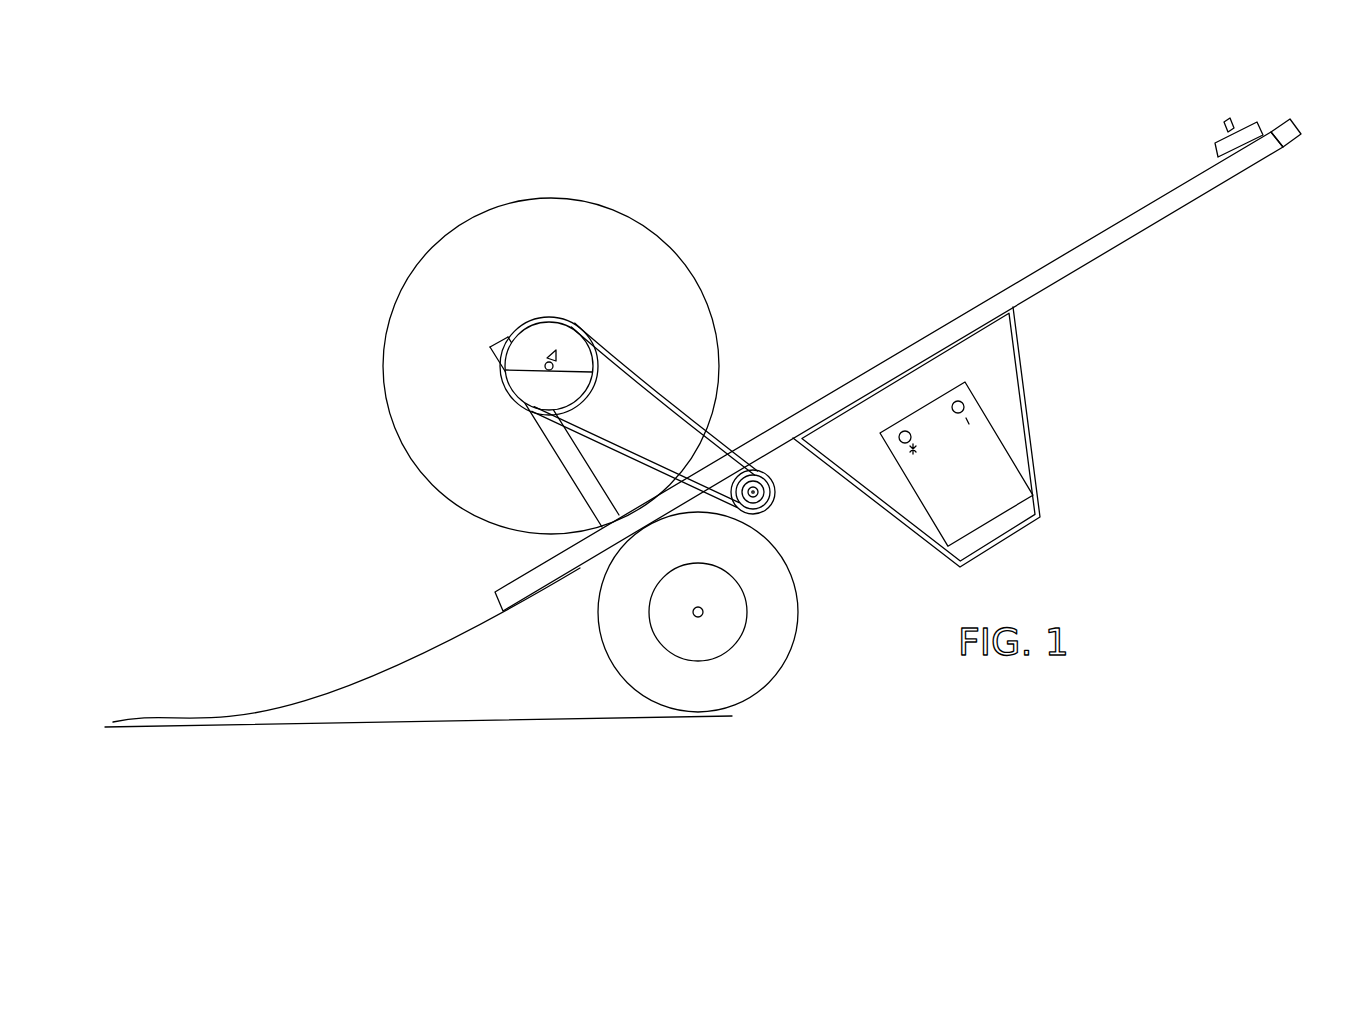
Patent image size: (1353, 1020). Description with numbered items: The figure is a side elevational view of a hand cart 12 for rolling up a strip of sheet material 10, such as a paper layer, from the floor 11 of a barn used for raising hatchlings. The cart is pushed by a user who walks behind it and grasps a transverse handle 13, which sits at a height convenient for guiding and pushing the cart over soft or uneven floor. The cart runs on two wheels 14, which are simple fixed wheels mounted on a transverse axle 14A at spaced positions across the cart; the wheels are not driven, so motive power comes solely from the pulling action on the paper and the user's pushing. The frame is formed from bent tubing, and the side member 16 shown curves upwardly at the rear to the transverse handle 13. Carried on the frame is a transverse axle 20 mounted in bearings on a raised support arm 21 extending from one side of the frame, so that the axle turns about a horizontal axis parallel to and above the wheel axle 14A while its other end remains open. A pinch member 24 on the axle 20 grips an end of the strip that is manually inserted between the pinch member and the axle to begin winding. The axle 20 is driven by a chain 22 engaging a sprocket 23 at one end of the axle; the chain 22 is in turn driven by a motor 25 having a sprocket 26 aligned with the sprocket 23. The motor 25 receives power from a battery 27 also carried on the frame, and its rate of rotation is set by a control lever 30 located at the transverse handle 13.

The strip of sheet material 10 is at (383, 668).
The floor 11 is at (463, 726).
The hand cart 12 is at (860, 291).
The transverse handle 13 is at (1296, 138).
The wheels 14 is at (800, 622).
The transverse axle 14A is at (701, 616).
The side member 16 is at (1068, 257).
The transverse axle 20 is at (598, 350).
The raised support arm 21 is at (575, 467).
The chain 22 is at (640, 372).
The sprocket 23 is at (588, 404).
The pinch member 24 is at (508, 363).
The motor 25 is at (778, 512).
The sprocket 26 is at (768, 466).
The battery 27 is at (975, 435).
The control lever 30 is at (1232, 120).